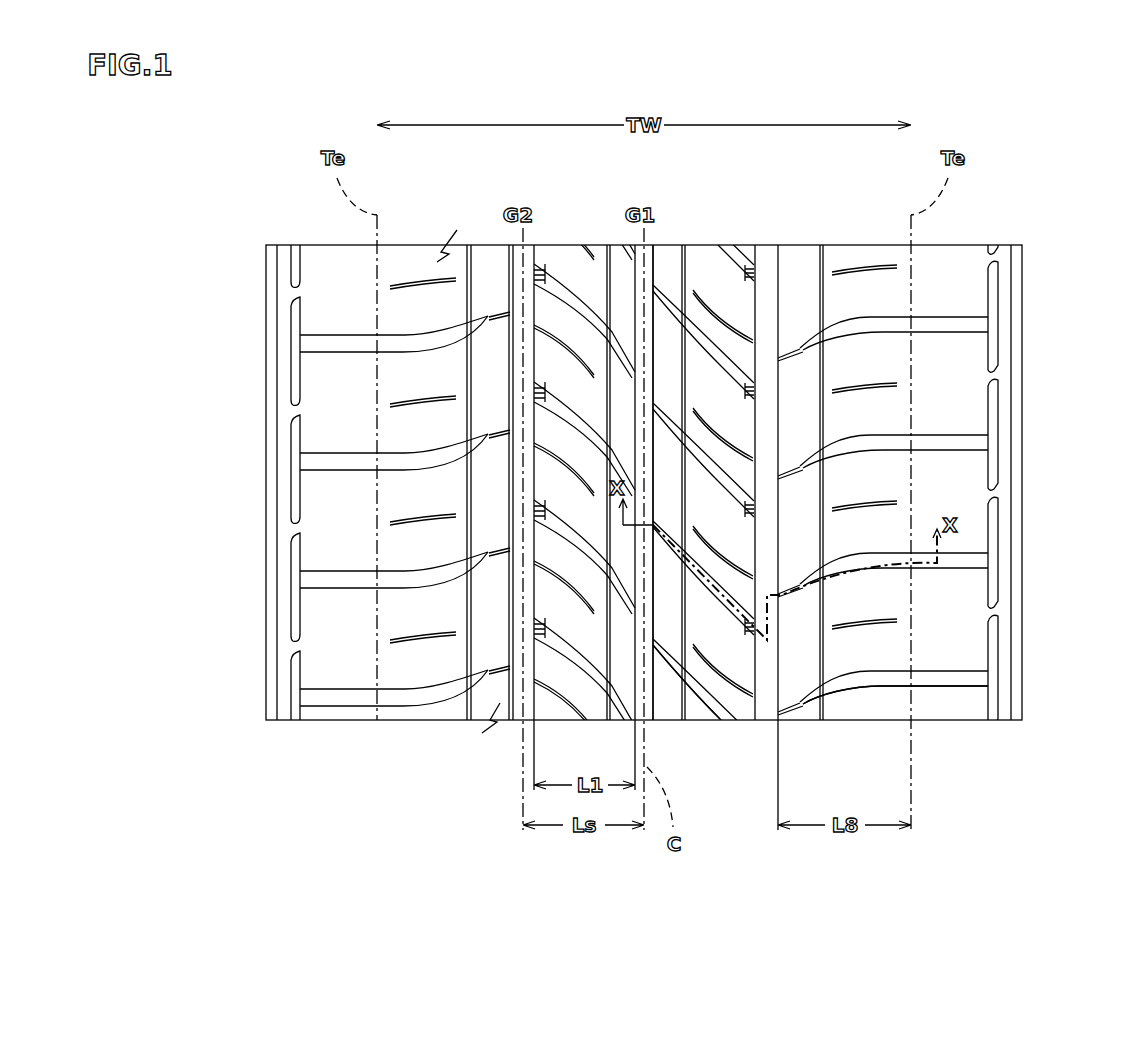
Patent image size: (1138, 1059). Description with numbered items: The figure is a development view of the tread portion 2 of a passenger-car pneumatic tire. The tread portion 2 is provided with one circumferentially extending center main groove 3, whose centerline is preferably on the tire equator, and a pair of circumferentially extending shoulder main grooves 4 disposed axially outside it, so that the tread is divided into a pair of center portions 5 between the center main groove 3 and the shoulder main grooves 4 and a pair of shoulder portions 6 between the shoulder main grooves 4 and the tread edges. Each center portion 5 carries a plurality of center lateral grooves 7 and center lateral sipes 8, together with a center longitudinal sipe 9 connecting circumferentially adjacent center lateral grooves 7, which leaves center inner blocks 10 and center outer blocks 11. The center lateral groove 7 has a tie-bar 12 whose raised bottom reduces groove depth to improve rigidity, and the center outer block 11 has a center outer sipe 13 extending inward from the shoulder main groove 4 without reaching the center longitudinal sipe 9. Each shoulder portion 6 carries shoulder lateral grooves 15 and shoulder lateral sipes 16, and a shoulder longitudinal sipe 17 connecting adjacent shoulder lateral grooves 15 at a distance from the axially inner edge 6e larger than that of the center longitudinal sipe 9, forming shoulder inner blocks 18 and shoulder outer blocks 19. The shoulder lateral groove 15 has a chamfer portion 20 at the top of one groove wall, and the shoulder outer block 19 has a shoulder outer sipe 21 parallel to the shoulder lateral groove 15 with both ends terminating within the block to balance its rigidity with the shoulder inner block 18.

The tread portion 2 is at (483, 236).
The center main groove 3 is at (641, 275).
The shoulder main groove 4 is at (519, 269).
The center portion 5 is at (588, 236).
The shoulder portion 6 is at (430, 236).
The axially inner edge of the shoulder portion 6e is at (775, 265).
The center lateral groove 7 is at (563, 290).
The center lateral sipe 8 is at (637, 605).
The center longitudinal sipe 9 is at (700, 290).
The center inner block 10 is at (668, 272).
The center outer block 11 is at (707, 677).
The tie-bar 12 is at (753, 657).
The center outer sipe 13 is at (737, 687).
The shoulder lateral groove 15 is at (840, 447).
The shoulder lateral sipe 16 is at (803, 470).
The shoulder longitudinal sipe 17 is at (827, 623).
The shoulder inner block 18 is at (805, 273).
The shoulder outer block 19 is at (885, 268).
The chamfer portion 20 is at (947, 687).
The shoulder outer sipe 21 is at (860, 385).